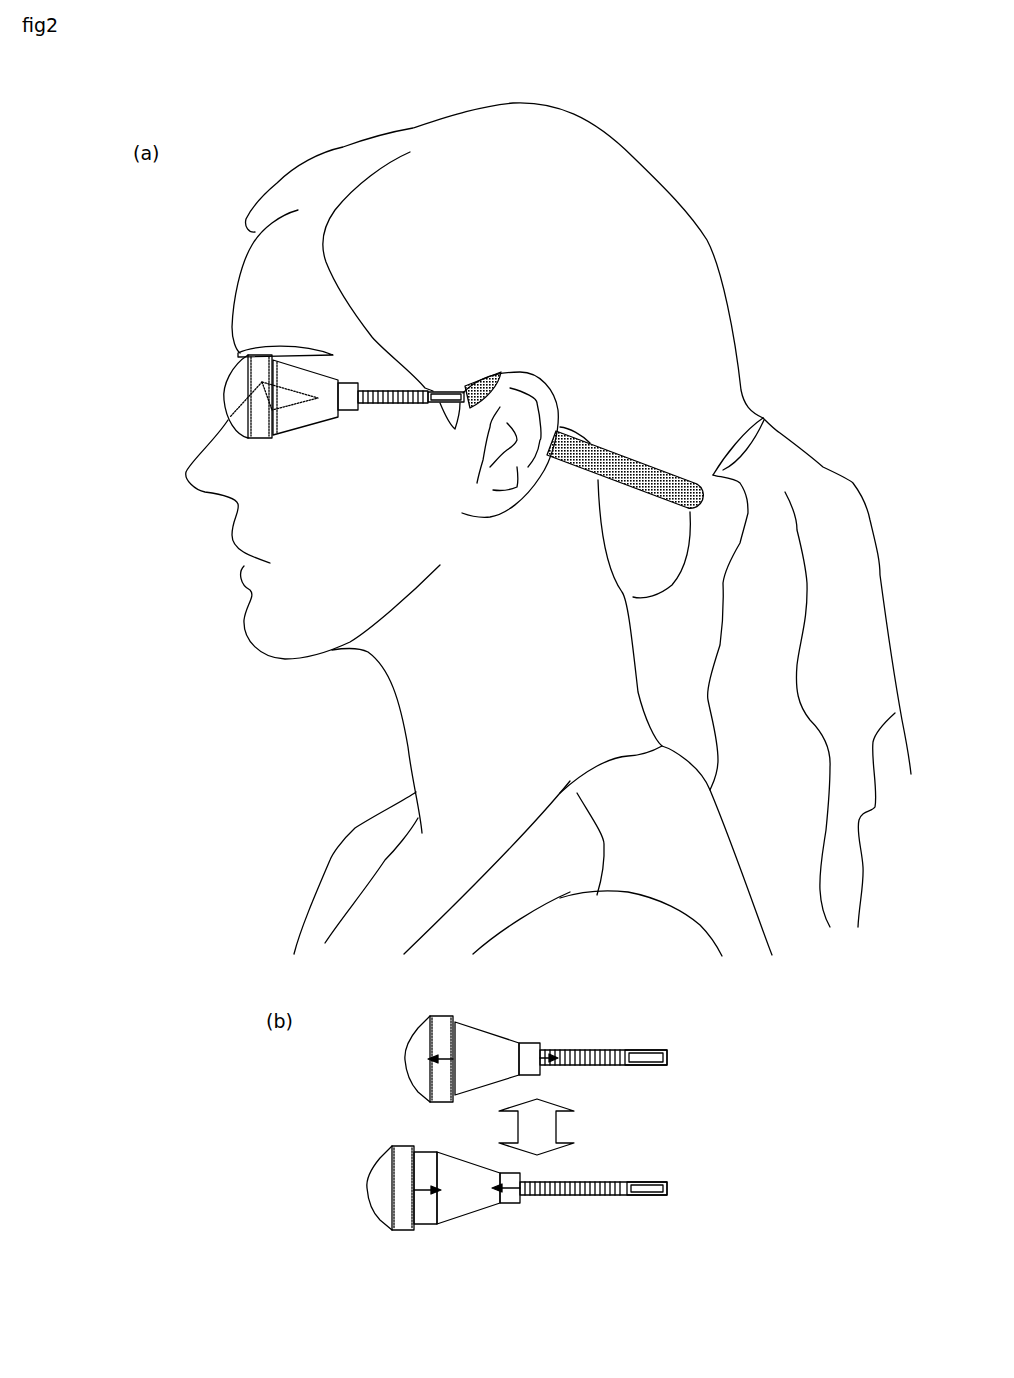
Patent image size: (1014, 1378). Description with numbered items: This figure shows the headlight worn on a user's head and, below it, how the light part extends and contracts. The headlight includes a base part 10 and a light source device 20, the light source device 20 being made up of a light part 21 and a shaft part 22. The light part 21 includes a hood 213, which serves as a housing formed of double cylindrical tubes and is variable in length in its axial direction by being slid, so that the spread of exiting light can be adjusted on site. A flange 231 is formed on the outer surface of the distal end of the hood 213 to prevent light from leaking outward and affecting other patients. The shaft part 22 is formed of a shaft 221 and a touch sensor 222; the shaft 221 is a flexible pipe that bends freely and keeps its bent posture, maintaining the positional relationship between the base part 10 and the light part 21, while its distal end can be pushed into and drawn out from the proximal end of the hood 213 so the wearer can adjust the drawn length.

The base part 10 is at (622, 463).
The light source device 20 is at (405, 1014).
The light part 21 is at (291, 446).
The shaft part 22 is at (429, 351).
The hood 213 is at (290, 422).
The shaft 221 is at (405, 392).
The touch sensor 222 is at (414, 337).
The flange 231 is at (238, 432).